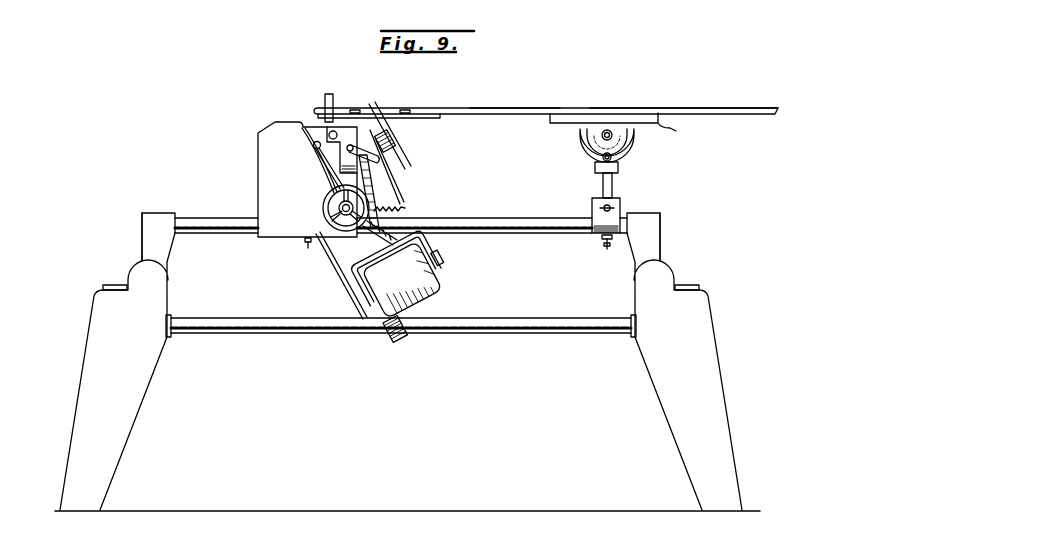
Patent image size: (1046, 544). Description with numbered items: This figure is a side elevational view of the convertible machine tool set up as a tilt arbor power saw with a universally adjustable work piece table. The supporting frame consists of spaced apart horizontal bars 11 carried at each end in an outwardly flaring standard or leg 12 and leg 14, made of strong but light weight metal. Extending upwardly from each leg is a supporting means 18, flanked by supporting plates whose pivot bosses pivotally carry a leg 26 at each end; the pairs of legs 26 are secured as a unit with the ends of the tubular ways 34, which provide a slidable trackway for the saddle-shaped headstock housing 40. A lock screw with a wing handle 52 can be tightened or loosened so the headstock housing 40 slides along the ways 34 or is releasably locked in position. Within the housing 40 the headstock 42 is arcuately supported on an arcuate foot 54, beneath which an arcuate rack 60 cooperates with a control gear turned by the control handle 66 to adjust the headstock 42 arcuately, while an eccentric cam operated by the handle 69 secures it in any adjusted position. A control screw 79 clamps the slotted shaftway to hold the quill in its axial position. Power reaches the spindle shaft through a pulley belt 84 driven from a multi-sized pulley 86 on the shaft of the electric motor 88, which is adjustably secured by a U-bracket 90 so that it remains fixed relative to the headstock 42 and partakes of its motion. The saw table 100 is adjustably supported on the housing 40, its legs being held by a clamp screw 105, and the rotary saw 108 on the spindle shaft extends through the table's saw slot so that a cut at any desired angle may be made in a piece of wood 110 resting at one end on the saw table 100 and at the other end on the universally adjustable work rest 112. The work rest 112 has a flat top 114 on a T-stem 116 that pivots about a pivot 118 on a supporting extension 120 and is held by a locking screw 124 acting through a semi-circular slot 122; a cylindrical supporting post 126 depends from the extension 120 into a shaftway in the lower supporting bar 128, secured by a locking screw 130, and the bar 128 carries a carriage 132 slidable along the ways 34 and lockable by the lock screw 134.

The horizontal bars 11 is at (482, 333).
The standard or leg 12 is at (128, 430).
The standard or leg 14 is at (668, 423).
The supporting means 18 is at (113, 285).
The leg 26 is at (142, 243).
The tubular way 34 is at (520, 233).
The headstock housing 40 is at (260, 140).
The headstock 42 is at (393, 185).
The wing handle 52 is at (312, 245).
The arcuate foot 54 is at (393, 197).
The arcuate rack 60 is at (405, 207).
The control handle 66 is at (328, 192).
The handle 69 is at (313, 147).
The control screw 79 is at (353, 147).
The pulley belt 84 is at (337, 272).
The multi-sized pulley 86 is at (343, 300).
The electric motor 88 is at (440, 302).
The U-bracket 90 is at (440, 247).
The saw table 100 is at (424, 118).
The clamp screw 105 is at (318, 122).
The rotary saw 108 is at (405, 156).
The piece of wood 110 is at (505, 108).
The universally adjustable work rest 112 is at (626, 126).
The flat top 114 is at (628, 108).
The T-stem 116 is at (590, 147).
The pivot 118 is at (601, 135).
The supporting extension 120 is at (619, 168).
The semi-circular slot 122 is at (633, 152).
The locking screw 124 is at (603, 160).
The cylindrical supporting post 126 is at (613, 190).
The lower supporting bar 128 is at (592, 207).
The locking screw 130 is at (614, 207).
The carriage 132 is at (597, 233).
The lock screw 134 is at (607, 250).